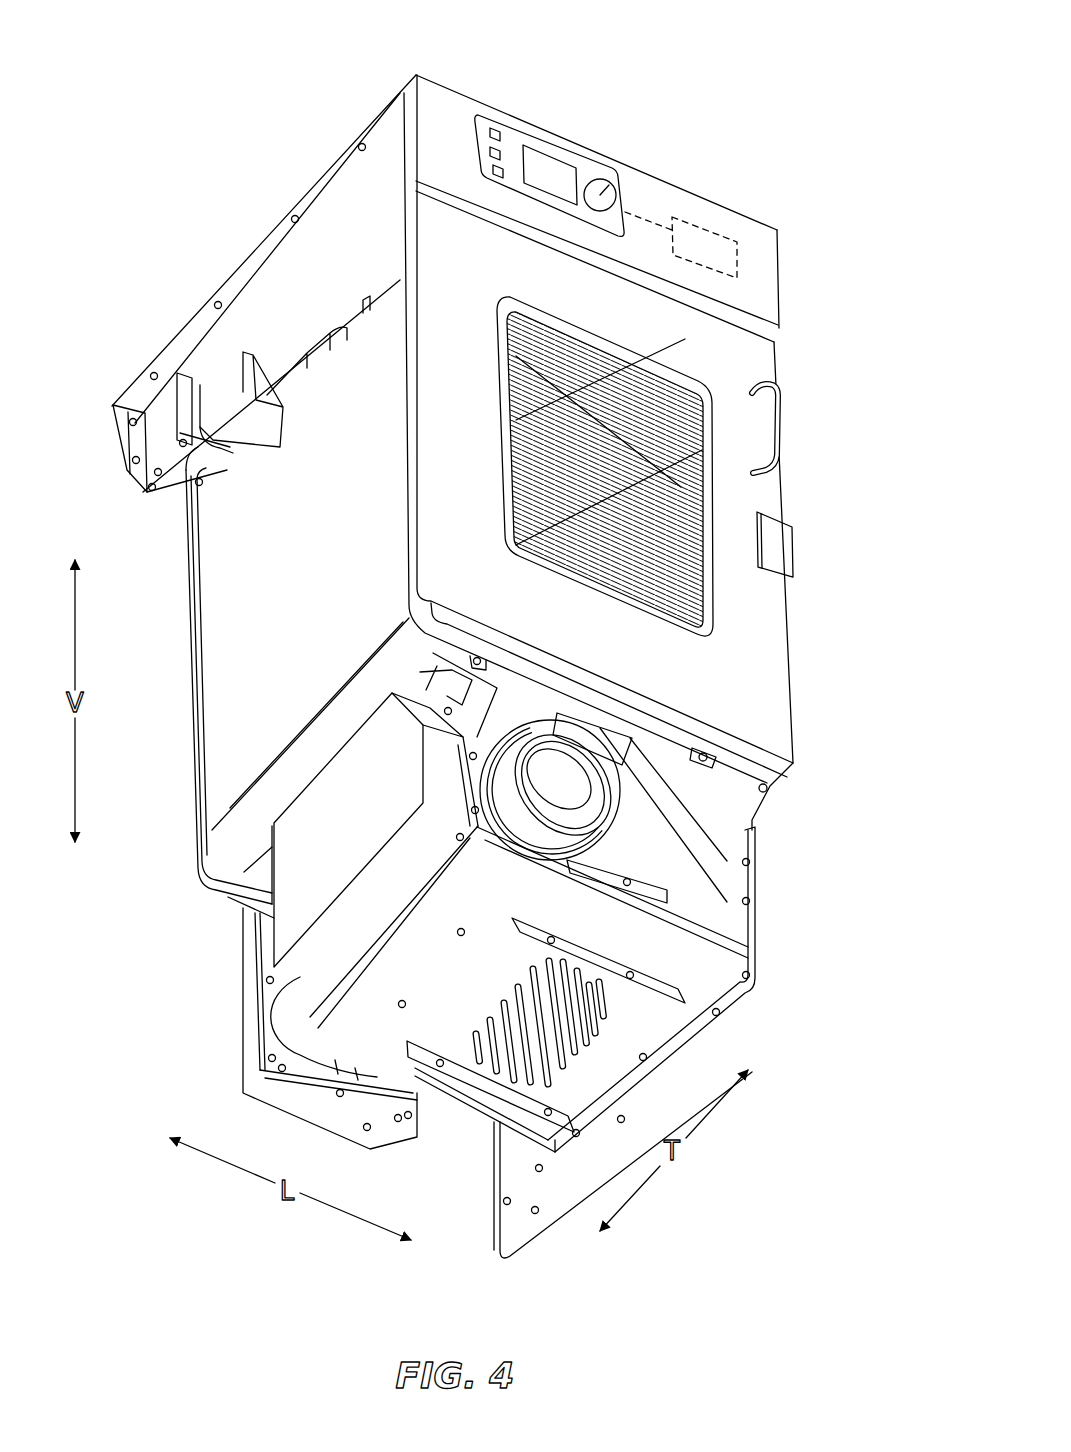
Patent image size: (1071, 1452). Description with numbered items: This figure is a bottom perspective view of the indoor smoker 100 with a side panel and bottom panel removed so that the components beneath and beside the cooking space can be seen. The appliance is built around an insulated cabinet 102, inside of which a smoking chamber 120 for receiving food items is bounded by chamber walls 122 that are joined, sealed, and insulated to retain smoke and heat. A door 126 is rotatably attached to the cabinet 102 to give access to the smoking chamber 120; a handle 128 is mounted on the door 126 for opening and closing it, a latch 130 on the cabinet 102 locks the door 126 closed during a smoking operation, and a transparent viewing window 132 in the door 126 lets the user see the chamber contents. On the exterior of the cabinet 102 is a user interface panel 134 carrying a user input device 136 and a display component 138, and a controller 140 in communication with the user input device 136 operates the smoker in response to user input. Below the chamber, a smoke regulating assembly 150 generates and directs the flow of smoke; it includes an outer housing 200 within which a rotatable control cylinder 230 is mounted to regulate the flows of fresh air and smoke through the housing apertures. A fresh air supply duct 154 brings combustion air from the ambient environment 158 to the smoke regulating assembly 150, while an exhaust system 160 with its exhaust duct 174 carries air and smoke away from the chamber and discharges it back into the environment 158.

The indoor smoker 100 is at (752, 91).
The insulated cabinet 102 is at (271, 286).
The smoking chamber 120 is at (710, 623).
The chamber walls 122 is at (217, 597).
The door 126 is at (755, 367).
The handle 128 is at (780, 422).
The latch 130 is at (780, 547).
The transparent viewing window 132 is at (675, 548).
The user interface panel 134 is at (545, 140).
The user input device 136 is at (497, 128).
The display component 138 is at (565, 175).
The controller 140 is at (710, 233).
The smoke regulating assembly 150 is at (628, 812).
The fresh air supply duct 154 is at (621, 1020).
The ambient environment 158 is at (763, 1220).
The exhaust system 160 is at (244, 941).
The exhaust duct 174 is at (255, 1026).
The outer housing 200 is at (688, 834).
The control cylinder 230 is at (572, 790).